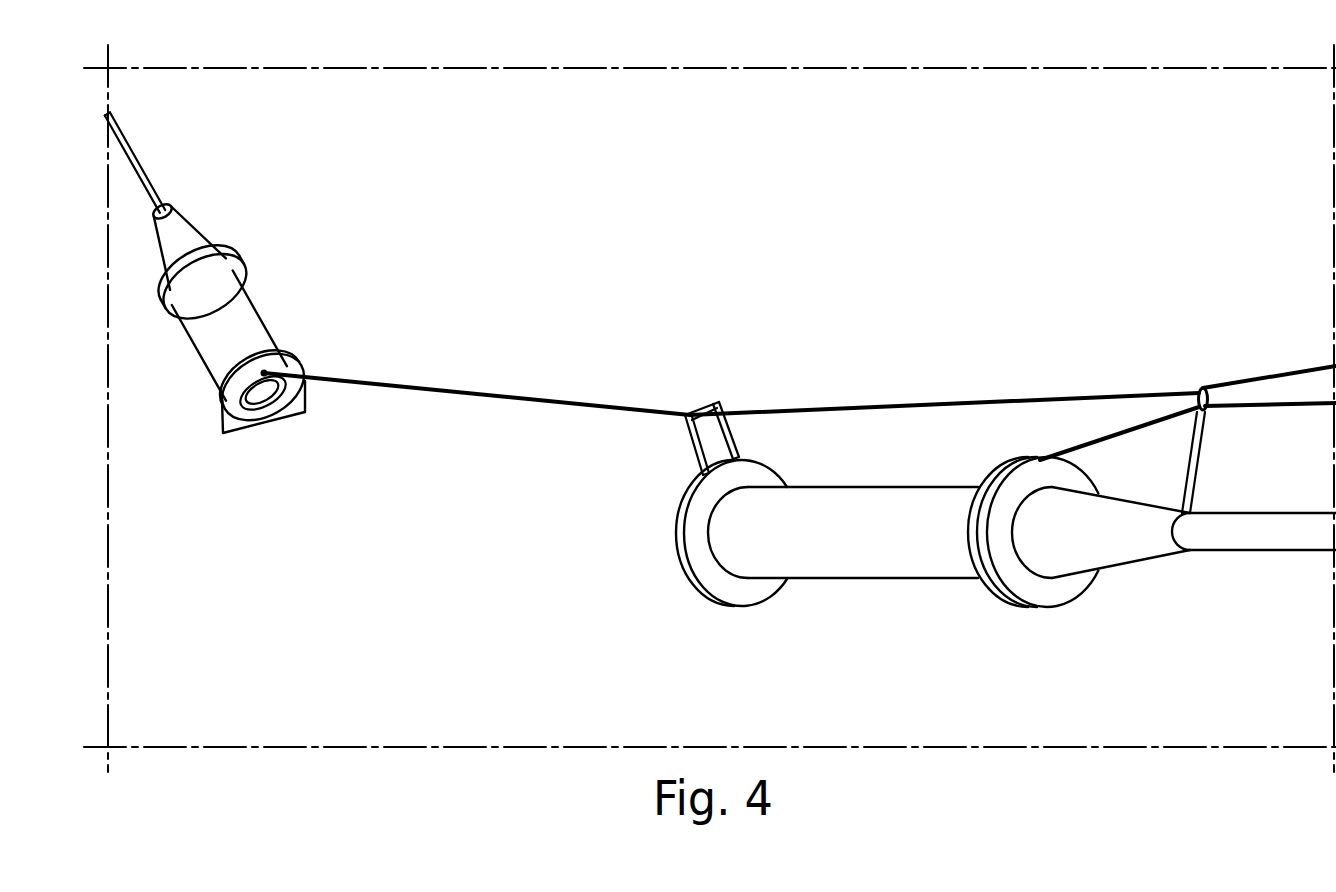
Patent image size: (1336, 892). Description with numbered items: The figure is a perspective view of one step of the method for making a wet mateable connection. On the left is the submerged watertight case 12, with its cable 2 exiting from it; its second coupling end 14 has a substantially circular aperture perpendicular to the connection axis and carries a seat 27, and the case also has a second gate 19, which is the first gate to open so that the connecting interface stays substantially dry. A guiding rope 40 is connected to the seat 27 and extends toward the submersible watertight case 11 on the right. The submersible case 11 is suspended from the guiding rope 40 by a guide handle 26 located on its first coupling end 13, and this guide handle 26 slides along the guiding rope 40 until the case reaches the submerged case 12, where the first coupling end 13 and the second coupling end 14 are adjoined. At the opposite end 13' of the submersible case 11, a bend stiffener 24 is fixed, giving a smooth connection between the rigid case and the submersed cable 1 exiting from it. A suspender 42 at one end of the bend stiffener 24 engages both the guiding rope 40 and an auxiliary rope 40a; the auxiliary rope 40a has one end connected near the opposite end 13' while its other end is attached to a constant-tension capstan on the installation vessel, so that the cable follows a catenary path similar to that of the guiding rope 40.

The submersed cable 1 is at (1245, 543).
The cable 2 is at (129, 160).
The submersible watertight case 11 is at (850, 557).
The submerged watertight case 12 is at (243, 318).
The first coupling end 13 is at (707, 541).
The opposite end 13' is at (1019, 550).
The second coupling end 14 is at (255, 412).
The second gate 19 is at (268, 385).
The bend stiffener 24 is at (1153, 553).
The guide handle 26 is at (731, 408).
The seat 27 is at (262, 375).
The guiding rope 40 is at (481, 392).
The auxiliary rope 40a is at (1310, 401).
The suspender 42 is at (1193, 460).